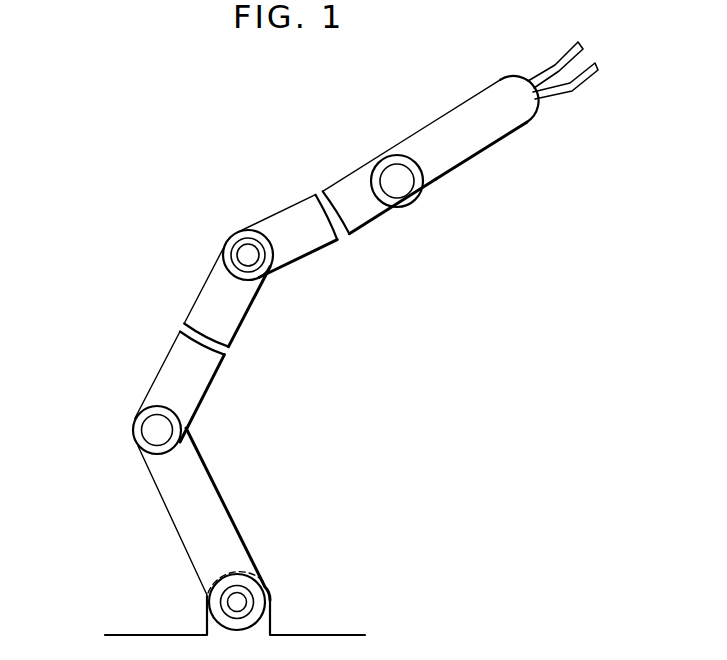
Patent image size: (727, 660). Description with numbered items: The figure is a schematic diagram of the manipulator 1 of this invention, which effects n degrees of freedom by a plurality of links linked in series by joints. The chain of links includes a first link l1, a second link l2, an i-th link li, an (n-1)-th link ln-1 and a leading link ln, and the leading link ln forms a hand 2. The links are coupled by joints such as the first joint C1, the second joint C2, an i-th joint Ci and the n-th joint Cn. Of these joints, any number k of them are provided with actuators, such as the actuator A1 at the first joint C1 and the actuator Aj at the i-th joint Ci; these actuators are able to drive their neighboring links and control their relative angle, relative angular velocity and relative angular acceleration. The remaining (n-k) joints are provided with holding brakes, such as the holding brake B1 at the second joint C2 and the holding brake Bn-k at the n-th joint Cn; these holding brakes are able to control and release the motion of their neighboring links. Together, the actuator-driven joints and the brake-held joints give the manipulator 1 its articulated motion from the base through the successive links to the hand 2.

The manipulator 1 is at (289, 128).
The hand 2 is at (549, 62).
The actuator A1 is at (250, 603).
The joint C1 is at (263, 583).
The holding brake B1 is at (142, 420).
The joint C2 is at (132, 432).
The actuator Aj is at (247, 250).
The joint Ci is at (233, 237).
The joint Cn is at (380, 160).
The holding brake Bn-k is at (403, 165).
The link l1 is at (218, 495).
The link l2 is at (217, 382).
The link li is at (257, 305).
The link ln-1 is at (382, 220).
The link ln is at (502, 143).